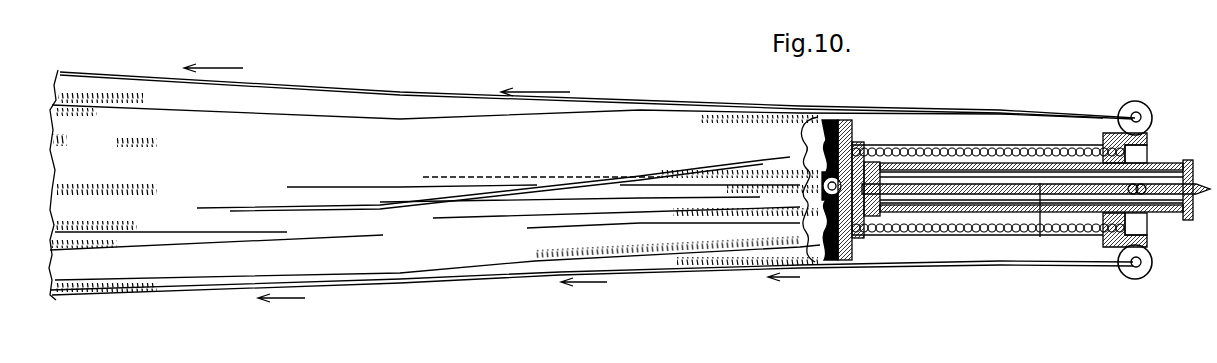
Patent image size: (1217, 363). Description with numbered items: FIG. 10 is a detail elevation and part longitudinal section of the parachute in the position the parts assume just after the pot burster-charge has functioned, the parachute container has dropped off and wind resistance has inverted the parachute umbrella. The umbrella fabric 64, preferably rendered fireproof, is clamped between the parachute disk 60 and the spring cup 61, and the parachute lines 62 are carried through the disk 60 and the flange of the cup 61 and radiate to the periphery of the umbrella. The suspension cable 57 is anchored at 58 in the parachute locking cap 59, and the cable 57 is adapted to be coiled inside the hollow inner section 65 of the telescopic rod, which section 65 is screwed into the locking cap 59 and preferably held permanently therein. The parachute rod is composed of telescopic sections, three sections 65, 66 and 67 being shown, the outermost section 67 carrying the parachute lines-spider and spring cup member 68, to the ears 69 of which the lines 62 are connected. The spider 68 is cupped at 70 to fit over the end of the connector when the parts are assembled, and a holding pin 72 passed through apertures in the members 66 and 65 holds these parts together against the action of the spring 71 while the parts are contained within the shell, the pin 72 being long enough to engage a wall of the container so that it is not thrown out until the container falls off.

The suspension cable 57 is at (1040, 237).
The cable anchorage 58 is at (808, 165).
The parachute locking cap 59 is at (808, 150).
The parachute disk 60 is at (803, 228).
The spring cup 61 is at (843, 240).
The parachute lines 62 is at (674, 108).
The umbrella fabric 64 is at (705, 101).
The inner section of the telescopic rod 65 is at (883, 173).
The telescopic rod section 66 is at (920, 162).
The outermost telescopic rod section 67 is at (975, 158).
The parachute lines-spider and spring cup member 68 is at (1147, 138).
The ears 69 is at (1143, 110).
The cupped portion of spider 70 is at (1143, 187).
The spring 71 is at (930, 235).
The holding pin 72 is at (1137, 192).